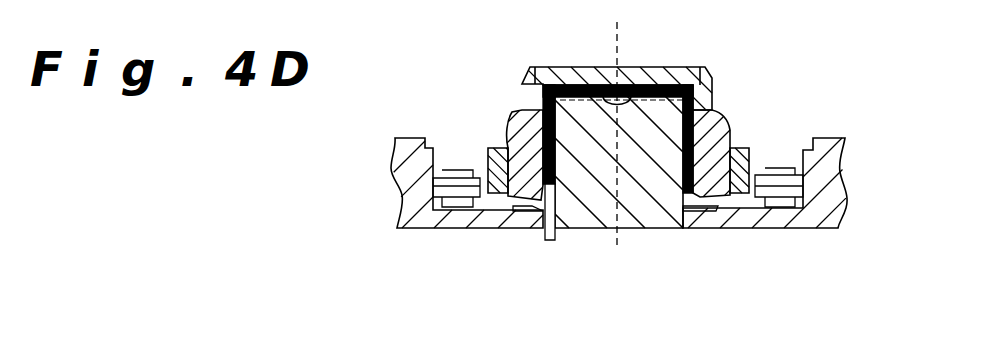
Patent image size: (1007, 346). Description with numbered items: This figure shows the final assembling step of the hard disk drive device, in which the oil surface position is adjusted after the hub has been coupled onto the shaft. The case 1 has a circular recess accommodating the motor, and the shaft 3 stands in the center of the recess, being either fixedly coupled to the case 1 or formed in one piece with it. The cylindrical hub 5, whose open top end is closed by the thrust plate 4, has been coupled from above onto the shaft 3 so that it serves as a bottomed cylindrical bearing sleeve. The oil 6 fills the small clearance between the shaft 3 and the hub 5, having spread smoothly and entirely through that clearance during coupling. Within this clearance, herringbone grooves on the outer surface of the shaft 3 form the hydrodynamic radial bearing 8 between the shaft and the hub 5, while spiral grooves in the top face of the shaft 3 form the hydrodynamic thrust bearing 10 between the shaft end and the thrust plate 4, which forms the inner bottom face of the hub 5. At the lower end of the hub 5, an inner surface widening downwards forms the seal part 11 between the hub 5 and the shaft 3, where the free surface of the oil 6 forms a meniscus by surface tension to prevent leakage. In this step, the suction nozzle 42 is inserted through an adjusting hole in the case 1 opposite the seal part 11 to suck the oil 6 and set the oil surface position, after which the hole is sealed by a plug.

The case 1 is at (403, 155).
The shaft 3 is at (643, 198).
The thrust plate 4 is at (667, 78).
The hub 5 is at (712, 118).
The oil 6 is at (733, 145).
The hydrodynamic radial bearing 8 is at (522, 106).
The hydrodynamic thrust bearing 10 is at (573, 91).
The seal part 11 is at (557, 186).
The suction nozzle 42 is at (547, 238).